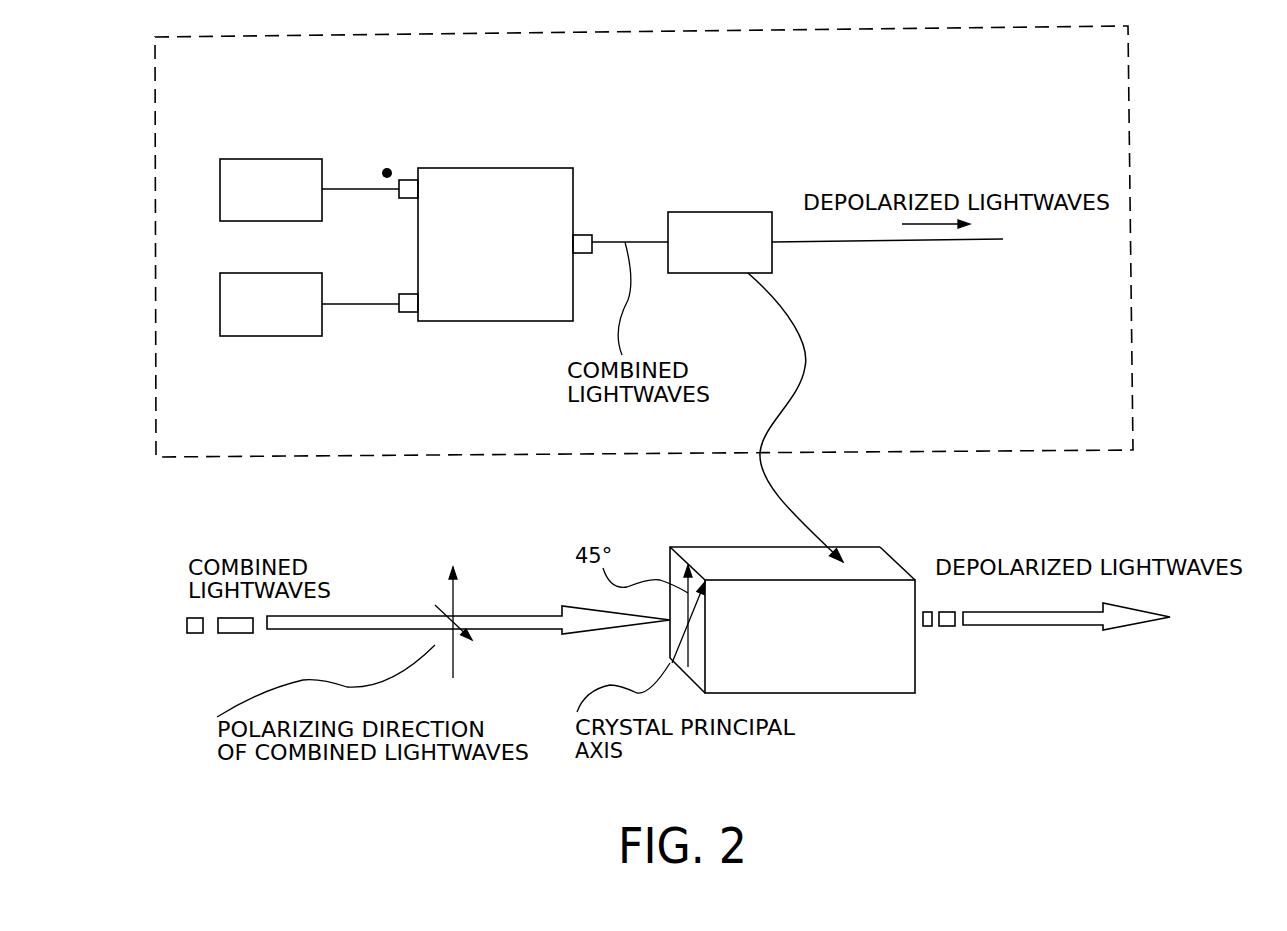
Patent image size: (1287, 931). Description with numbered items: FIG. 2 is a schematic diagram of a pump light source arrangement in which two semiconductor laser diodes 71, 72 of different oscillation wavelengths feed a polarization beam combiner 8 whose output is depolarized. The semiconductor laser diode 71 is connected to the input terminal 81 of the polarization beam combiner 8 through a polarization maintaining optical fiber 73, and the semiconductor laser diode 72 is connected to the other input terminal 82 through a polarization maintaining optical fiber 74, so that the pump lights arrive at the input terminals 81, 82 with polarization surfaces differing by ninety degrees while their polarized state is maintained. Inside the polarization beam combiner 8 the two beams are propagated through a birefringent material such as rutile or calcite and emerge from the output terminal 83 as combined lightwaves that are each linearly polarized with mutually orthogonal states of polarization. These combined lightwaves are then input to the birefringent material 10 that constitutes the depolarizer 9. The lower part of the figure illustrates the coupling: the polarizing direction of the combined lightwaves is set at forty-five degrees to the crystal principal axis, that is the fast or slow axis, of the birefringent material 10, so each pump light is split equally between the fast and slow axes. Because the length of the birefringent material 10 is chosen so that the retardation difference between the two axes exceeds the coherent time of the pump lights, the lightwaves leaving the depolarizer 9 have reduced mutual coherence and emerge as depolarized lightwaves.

The polarization beam combiner 8 is at (495, 298).
The depolarizer 9 is at (720, 275).
The birefringent material 10 is at (747, 225).
The semiconductor laser diode 71 is at (290, 175).
The semiconductor laser diode 72 is at (292, 318).
The polarization maintaining optical fiber 73 is at (363, 187).
The polarization maintaining optical fiber 74 is at (368, 304).
The input terminal 81 is at (408, 193).
The input terminal 82 is at (408, 312).
The output terminal 83 is at (583, 245).